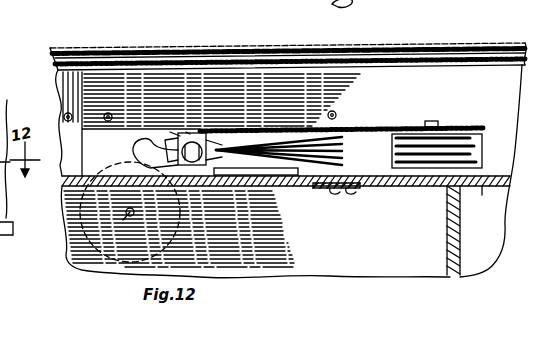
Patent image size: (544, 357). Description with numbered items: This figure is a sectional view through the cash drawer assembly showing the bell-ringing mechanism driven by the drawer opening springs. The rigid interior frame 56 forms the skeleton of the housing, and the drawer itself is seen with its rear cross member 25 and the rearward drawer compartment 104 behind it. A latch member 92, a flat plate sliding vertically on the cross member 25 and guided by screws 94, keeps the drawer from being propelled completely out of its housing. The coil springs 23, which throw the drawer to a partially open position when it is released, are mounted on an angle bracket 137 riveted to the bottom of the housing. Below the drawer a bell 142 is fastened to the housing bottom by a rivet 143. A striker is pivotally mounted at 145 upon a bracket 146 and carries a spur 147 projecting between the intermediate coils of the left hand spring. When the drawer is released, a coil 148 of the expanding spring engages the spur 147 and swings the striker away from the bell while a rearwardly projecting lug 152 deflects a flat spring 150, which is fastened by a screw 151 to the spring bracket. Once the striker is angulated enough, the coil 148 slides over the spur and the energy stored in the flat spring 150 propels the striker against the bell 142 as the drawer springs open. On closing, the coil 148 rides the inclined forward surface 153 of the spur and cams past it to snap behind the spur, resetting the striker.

The interior frame 56 is at (460, 41).
The angle bracket 137 is at (378, 128).
The coil spring 23 is at (478, 152).
The rear cross member 25 is at (485, 187).
The latch member 92 is at (352, 191).
The screw 94 is at (336, 190).
The rearward drawer compartment 104 is at (371, 256).
The bell 142 is at (88, 226).
The rivet 143 is at (78, 250).
The pivot 145 is at (187, 132).
The bracket 146 is at (204, 133).
The spur 147 is at (196, 166).
The coil 148 is at (285, 133).
The flat spring 150 is at (170, 132).
The screw 151 is at (262, 133).
The lug 152 is at (160, 142).
The inclined forward surface 153 is at (240, 184).